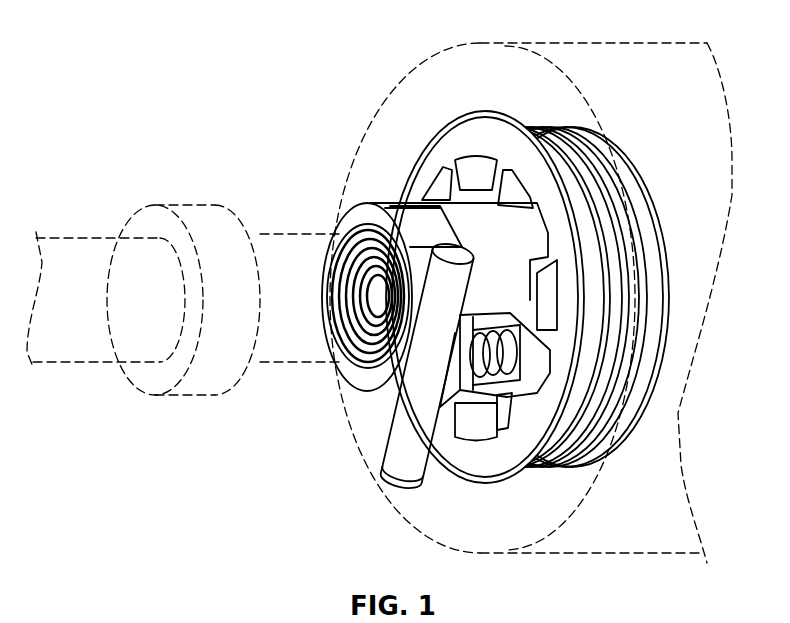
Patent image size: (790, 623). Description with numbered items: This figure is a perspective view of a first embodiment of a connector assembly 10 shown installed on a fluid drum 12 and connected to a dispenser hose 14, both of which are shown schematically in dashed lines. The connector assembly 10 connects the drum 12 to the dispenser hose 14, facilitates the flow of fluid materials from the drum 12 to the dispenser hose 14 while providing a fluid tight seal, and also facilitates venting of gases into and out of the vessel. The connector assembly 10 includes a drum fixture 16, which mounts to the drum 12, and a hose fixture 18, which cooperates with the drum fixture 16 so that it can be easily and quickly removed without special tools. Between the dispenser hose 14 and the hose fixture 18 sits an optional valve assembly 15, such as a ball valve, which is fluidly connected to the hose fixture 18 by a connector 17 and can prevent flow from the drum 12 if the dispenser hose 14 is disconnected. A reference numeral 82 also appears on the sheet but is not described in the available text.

The connector assembly 10 is at (405, 62).
The drum 12 is at (663, 43).
The dispenser hose 14 is at (63, 238).
The valve assembly 15 is at (173, 205).
The drum fixture 16 is at (508, 483).
The connector 17 is at (277, 233).
The hose fixture 18 is at (405, 195).
The reference element 82 is at (101, 620).